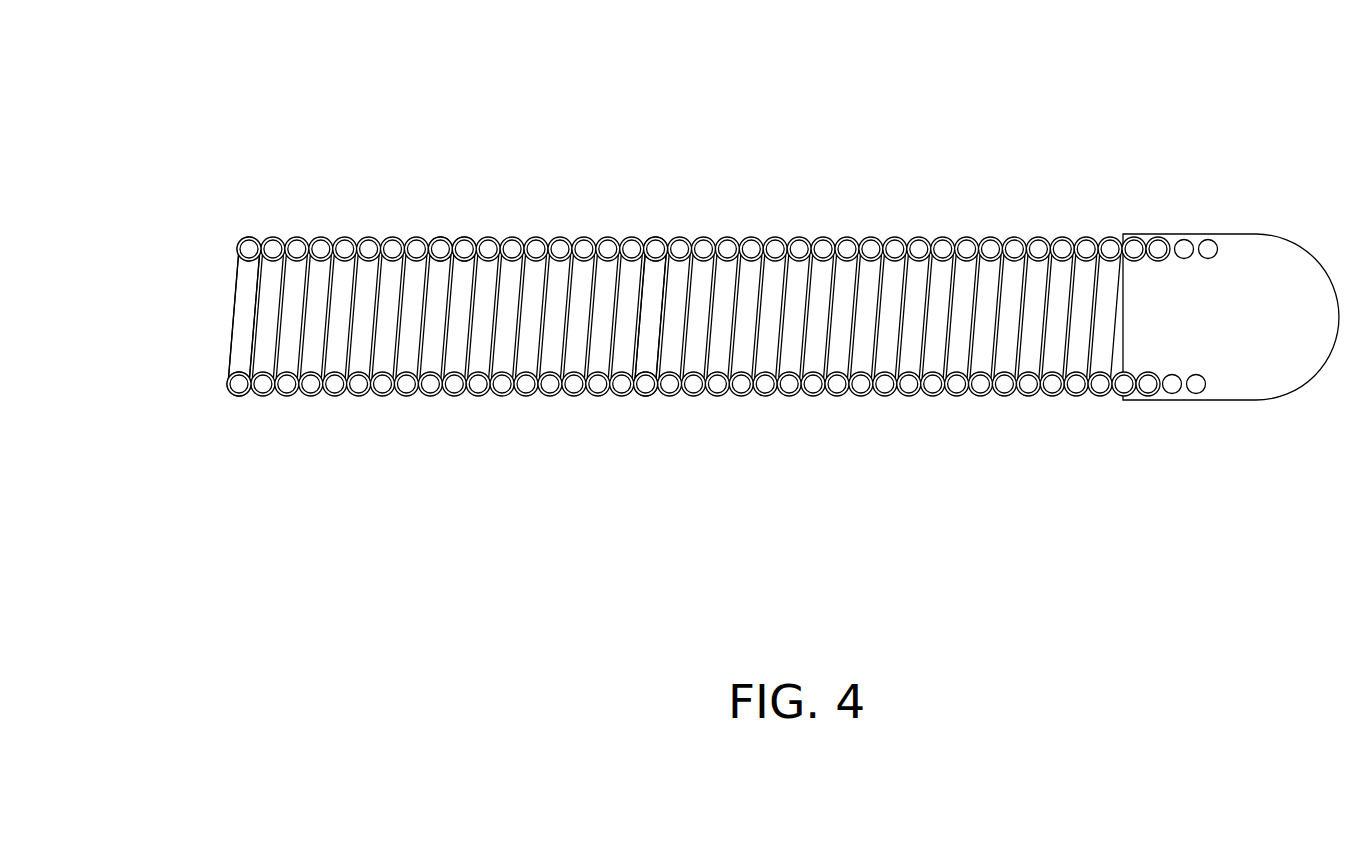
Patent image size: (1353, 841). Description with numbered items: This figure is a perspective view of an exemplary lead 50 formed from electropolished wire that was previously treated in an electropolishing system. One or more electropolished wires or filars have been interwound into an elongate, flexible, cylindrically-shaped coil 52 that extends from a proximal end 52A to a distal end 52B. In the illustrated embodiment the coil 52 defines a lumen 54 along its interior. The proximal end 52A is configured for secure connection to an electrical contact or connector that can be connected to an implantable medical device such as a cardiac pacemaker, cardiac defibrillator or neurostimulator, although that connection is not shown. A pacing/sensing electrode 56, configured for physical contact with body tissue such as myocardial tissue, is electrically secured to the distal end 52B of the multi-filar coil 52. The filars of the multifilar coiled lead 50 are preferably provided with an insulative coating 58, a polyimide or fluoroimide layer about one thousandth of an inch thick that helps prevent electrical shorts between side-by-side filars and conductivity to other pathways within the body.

The lead 50 is at (1040, 130).
The coil 52 is at (653, 290).
The proximal end 52A is at (236, 258).
The distal end 52B is at (1182, 243).
The lumen 54 is at (212, 336).
The pacing/sensing electrode 56 is at (1292, 270).
The insulative coating 58 is at (452, 240).